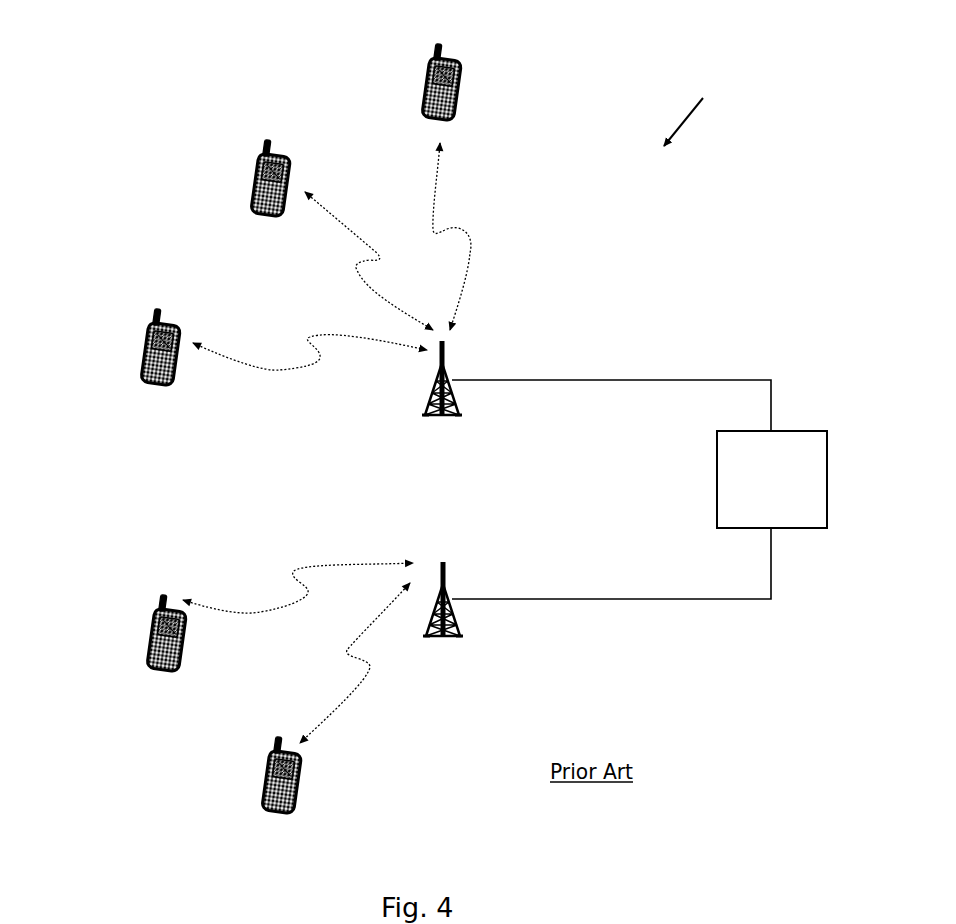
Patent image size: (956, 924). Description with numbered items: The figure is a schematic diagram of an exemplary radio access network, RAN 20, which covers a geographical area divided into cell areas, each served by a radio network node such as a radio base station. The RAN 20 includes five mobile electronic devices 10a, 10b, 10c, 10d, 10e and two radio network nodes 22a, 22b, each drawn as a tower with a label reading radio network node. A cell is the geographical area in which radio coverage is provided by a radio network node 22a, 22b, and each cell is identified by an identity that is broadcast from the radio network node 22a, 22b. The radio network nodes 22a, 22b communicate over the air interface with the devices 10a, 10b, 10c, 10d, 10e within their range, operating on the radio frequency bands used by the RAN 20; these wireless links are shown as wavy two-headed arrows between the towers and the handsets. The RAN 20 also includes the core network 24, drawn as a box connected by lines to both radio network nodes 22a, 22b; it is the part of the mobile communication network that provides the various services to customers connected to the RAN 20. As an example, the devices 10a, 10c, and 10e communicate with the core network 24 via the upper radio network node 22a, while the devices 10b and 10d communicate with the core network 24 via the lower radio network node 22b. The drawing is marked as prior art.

The radio access network 20 is at (707, 103).
The mobile electronic device 10a is at (147, 340).
The mobile electronic device 10b is at (153, 640).
The mobile electronic device 10c is at (258, 175).
The mobile electronic device 10d is at (268, 790).
The mobile electronic device 10e is at (460, 70).
The radio network node 22a is at (447, 360).
The radio network node 22b is at (447, 580).
The core network 24 is at (772, 479).